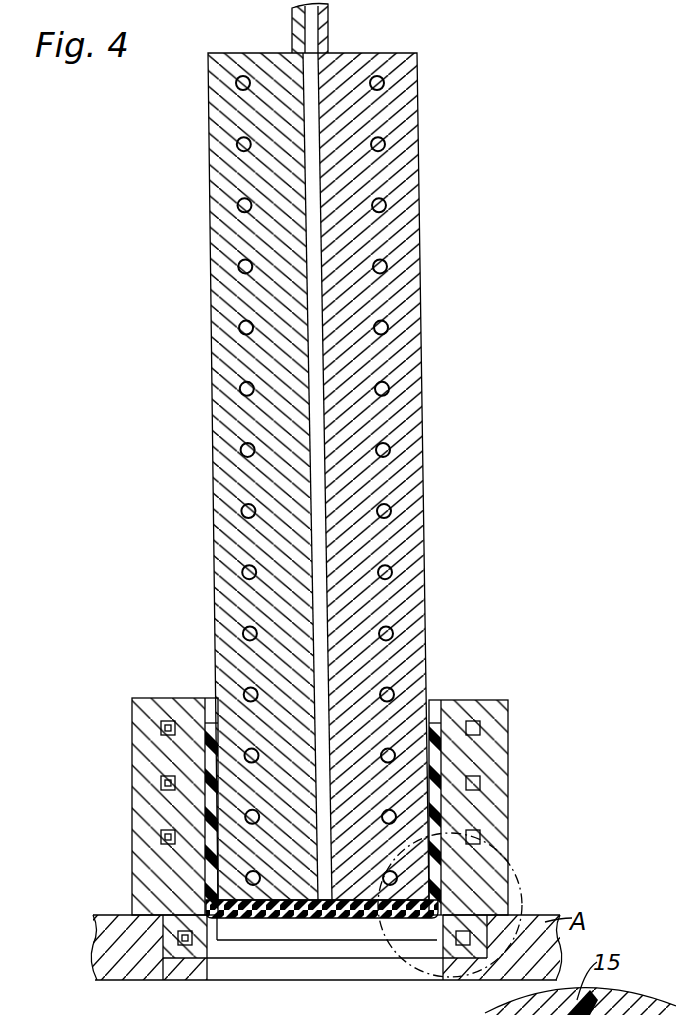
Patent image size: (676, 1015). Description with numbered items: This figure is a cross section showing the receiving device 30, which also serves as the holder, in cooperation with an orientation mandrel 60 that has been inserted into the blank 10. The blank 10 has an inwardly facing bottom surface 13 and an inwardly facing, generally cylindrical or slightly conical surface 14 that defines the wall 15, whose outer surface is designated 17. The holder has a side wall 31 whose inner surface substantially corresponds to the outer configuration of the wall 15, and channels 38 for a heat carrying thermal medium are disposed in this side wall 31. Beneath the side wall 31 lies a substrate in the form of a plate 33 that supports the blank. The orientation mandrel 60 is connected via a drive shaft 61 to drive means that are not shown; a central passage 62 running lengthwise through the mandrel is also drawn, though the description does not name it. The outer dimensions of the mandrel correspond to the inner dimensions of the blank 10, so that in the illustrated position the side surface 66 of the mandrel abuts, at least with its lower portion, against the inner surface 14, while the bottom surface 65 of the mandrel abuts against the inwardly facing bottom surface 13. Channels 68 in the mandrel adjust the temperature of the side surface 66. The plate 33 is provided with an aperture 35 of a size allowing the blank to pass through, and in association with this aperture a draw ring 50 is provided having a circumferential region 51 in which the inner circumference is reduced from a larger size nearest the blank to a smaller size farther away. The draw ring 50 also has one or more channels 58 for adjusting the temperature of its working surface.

The drive shaft 61 is at (323, 30).
The channels 68 is at (383, 143).
The central bore 62 is at (312, 187).
The orientation mandrel 60 is at (415, 240).
The side surface of the mandrel 66 is at (428, 393).
The receiving device 30 is at (518, 727).
The channels for a thermal medium 38 is at (160, 783).
The blank 10 is at (195, 819).
The side wall 31 is at (155, 873).
The plate 33 is at (118, 950).
The channels 58 is at (185, 948).
The bottom surface of the mandrel 65 is at (268, 920).
The aperture 35 is at (330, 968).
The circumferential region 51 is at (428, 922).
The inwardly facing bottom surface 13 is at (338, 897).
The inwardly facing surface 14 is at (425, 838).
The wall 15 is at (440, 810).
The outer surface of the wall 17 is at (440, 850).
The draw ring 50 is at (468, 870).